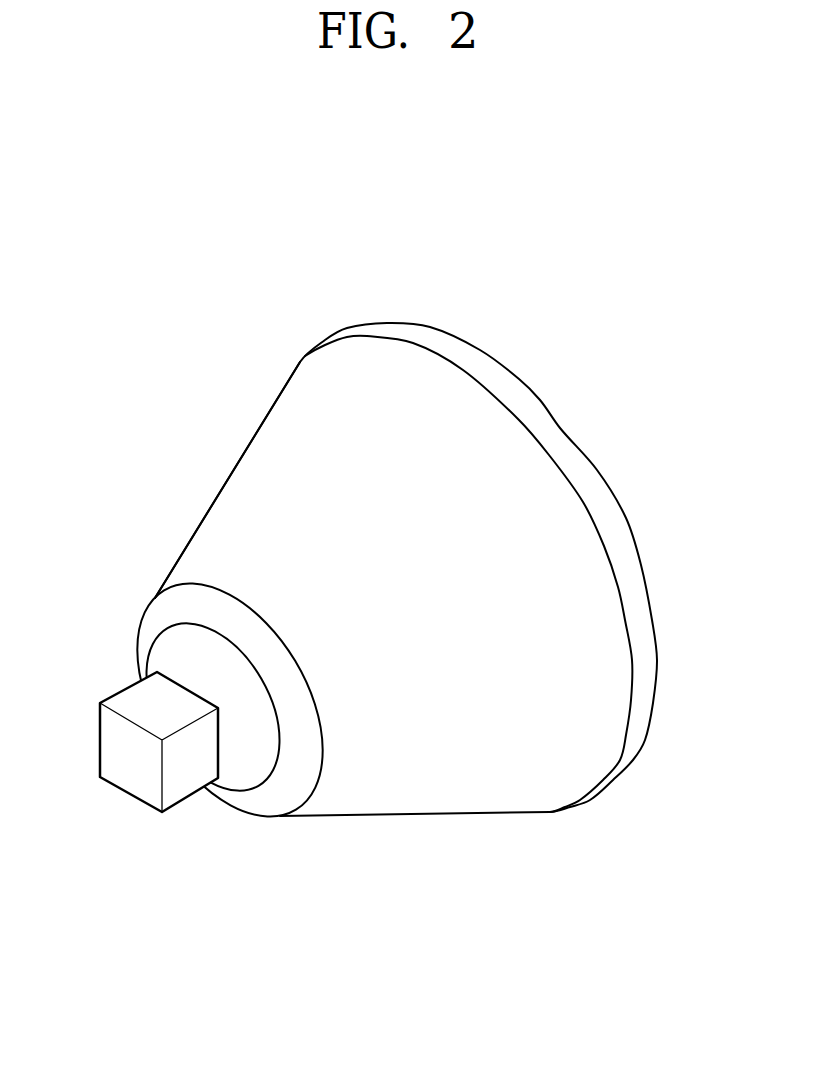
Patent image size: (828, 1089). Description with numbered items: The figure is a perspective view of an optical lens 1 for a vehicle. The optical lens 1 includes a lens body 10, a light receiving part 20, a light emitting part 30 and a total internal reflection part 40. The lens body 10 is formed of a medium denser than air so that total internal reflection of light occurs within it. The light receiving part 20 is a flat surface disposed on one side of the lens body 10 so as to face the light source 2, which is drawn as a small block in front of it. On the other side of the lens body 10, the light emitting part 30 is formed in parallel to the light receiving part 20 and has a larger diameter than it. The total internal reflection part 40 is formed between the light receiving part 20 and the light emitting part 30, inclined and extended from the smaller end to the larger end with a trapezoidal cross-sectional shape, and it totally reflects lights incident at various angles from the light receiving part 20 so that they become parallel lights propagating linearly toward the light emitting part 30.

The optical lens 1 is at (453, 315).
The light source 2 is at (123, 777).
The lens body 10 is at (452, 780).
The light receiving part 20 is at (247, 743).
The light emitting part 30 is at (598, 470).
The total internal reflection part 40 is at (486, 880).